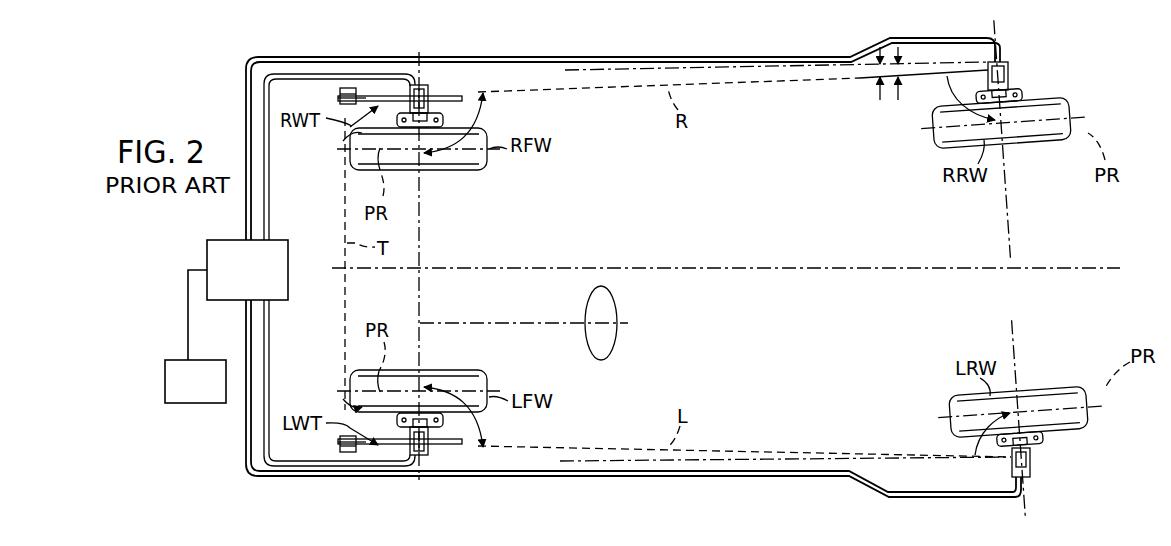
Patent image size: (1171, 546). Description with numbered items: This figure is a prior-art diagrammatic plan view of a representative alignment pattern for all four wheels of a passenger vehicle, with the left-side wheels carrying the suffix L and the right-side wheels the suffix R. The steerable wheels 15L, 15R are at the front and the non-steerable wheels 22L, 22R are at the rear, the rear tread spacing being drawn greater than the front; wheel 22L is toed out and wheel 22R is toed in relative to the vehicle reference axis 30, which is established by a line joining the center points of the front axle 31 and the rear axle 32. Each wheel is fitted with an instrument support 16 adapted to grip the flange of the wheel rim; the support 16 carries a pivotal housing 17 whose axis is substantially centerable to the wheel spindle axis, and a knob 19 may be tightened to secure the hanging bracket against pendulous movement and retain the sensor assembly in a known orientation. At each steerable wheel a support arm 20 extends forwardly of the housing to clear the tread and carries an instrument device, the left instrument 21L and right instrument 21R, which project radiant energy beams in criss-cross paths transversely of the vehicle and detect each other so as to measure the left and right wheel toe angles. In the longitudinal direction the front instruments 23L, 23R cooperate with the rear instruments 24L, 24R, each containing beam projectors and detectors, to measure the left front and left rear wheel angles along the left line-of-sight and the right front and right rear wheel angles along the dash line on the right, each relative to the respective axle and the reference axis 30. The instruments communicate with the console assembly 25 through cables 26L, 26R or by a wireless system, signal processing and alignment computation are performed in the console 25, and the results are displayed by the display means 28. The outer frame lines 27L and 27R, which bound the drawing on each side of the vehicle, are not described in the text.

The right steerable wheel 15R is at (484, 167).
The left steerable wheel 15L is at (484, 375).
The instrument support 16 is at (392, 114).
The pivotal housing 17 is at (436, 93).
The knob 19 is at (424, 85).
The support arm 20 is at (370, 96).
The right instrument 21R is at (340, 94).
The left instrument 21L is at (340, 445).
The right non-steerable wheel 22R is at (937, 135).
The left non-steerable wheel 22L is at (1044, 390).
The right front instrument 23R is at (408, 85).
The left front instrument 23L is at (410, 449).
The right rear instrument 24R is at (1008, 63).
The left rear instrument 24L is at (1027, 479).
The console assembly 25 is at (222, 242).
The right cable 26R is at (271, 203).
The left cable 26L is at (268, 372).
The right frame rail 27R is at (600, 57).
The left frame rail 27L is at (598, 478).
The display means 28 is at (186, 404).
The vehicle reference axis 30 is at (773, 268).
The front axle 31 is at (421, 280).
The rear axle 32 is at (1007, 210).